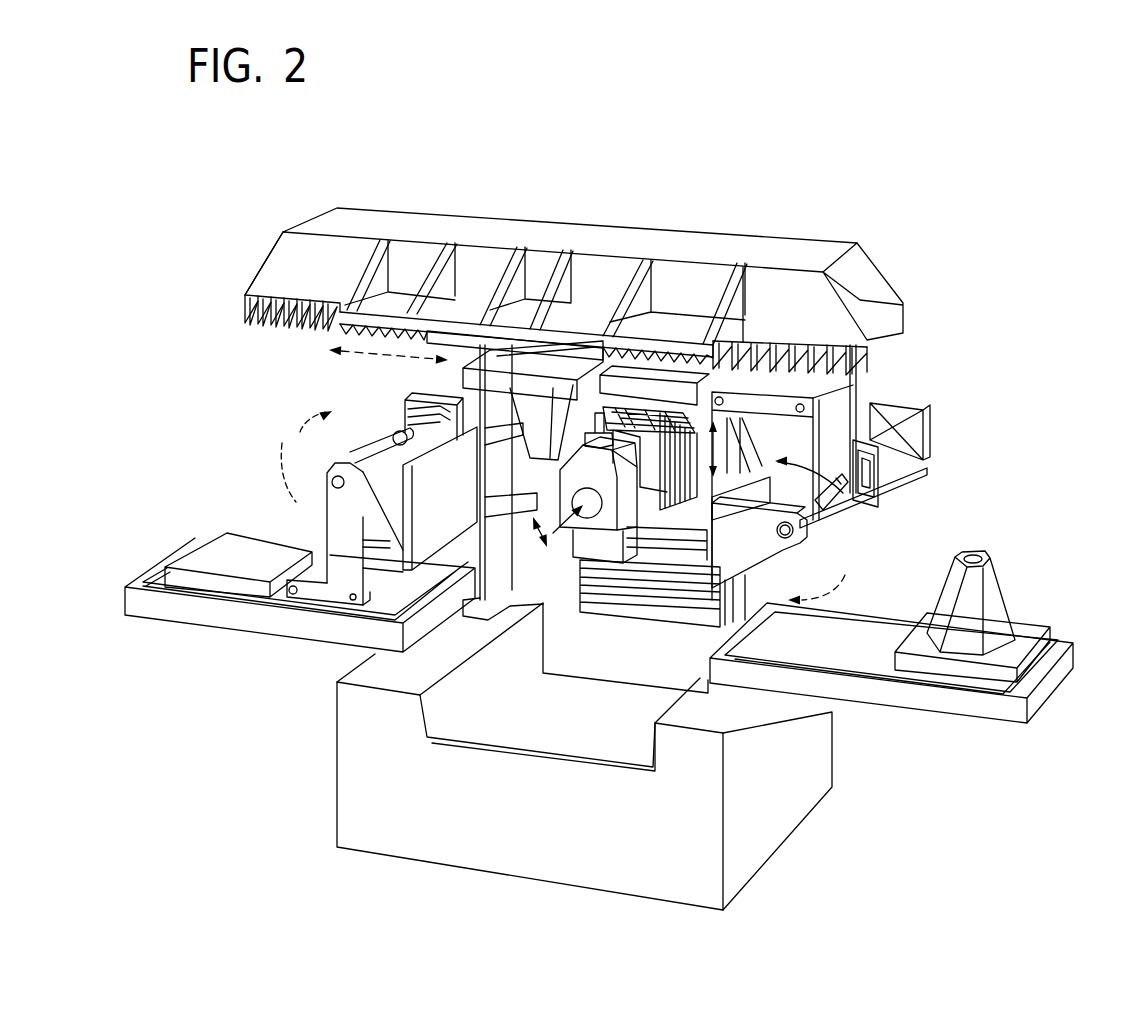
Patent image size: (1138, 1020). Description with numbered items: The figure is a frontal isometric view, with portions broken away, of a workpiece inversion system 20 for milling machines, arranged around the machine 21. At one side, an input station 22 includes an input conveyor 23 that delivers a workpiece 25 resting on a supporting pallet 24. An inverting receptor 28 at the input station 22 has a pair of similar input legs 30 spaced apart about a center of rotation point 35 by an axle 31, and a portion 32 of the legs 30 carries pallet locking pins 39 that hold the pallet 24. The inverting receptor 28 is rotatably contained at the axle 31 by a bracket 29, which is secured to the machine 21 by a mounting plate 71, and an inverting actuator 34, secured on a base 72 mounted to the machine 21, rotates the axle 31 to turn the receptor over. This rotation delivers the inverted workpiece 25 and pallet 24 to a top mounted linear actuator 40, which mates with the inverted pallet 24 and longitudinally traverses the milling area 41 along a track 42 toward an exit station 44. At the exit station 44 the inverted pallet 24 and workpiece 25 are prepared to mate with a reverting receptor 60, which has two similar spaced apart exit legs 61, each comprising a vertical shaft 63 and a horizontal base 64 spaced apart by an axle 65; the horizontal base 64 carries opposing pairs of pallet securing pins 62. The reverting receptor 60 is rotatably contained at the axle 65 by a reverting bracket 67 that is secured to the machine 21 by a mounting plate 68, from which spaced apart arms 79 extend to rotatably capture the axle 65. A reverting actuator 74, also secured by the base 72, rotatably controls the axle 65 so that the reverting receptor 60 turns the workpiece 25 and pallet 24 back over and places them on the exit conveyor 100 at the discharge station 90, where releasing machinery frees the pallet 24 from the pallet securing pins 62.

The workpiece inversion system 20 is at (574, 255).
The machine 21 is at (507, 780).
The input station 22 is at (966, 450).
The input conveyor 23 is at (867, 653).
The pallet 24 is at (627, 377).
The workpiece 25 is at (560, 405).
The inverting receptor 28 is at (858, 394).
The bracket 29 is at (755, 548).
The input legs 30 is at (843, 417).
The axle 31 is at (832, 497).
The portion 32 is at (750, 398).
The inverting actuator 34 is at (885, 417).
The center of rotation point 35 is at (836, 590).
The pallet locking pins 39 is at (790, 400).
The linear actuator 40 is at (512, 372).
The milling area 41 is at (537, 560).
The track 42 is at (248, 334).
The exit station 44 is at (300, 450).
The reverting receptor 60 is at (303, 505).
The exit legs 61 is at (390, 422).
The pallet securing pins 62 is at (294, 590).
The vertical shaft 63 is at (298, 585).
The horizontal base 64 is at (311, 594).
The axle 65 is at (383, 470).
The reverting bracket 67 is at (448, 398).
The mounting plate 68 is at (428, 493).
The mounting plate 71 is at (693, 530).
The base 72 is at (930, 475).
The reverting actuator 74 is at (420, 390).
The arms 79 is at (430, 558).
The discharge station 90 is at (250, 470).
The exit conveyor 100 is at (205, 590).